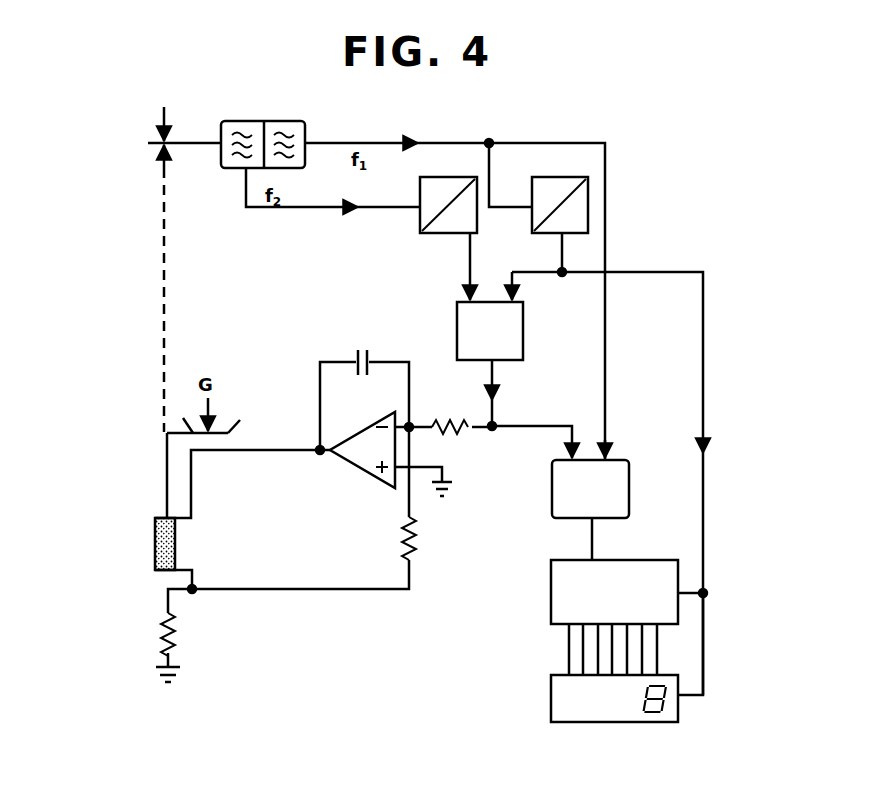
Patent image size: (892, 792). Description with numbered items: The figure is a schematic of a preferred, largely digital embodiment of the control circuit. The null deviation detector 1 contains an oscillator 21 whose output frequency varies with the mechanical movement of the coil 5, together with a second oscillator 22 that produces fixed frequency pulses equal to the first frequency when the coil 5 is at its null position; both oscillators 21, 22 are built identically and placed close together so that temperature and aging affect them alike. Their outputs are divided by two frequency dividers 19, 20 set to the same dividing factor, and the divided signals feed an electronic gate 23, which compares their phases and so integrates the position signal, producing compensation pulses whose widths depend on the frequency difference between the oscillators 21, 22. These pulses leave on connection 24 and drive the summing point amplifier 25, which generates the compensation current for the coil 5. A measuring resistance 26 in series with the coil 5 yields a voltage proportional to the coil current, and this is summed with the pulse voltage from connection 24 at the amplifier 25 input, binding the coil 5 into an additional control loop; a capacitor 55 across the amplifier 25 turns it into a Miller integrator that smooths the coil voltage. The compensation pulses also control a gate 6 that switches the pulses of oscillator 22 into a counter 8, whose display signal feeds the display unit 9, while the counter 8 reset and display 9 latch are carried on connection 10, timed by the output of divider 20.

The null deviation detector 1 is at (314, 134).
The oscillator 21 is at (237, 121).
The second oscillator 22 is at (282, 121).
The frequency divider 19 is at (428, 233).
The frequency divider 20 is at (573, 177).
The electronic gate 23 is at (523, 316).
The connection 24 is at (527, 424).
The gate 6 is at (552, 492).
The counter 8 is at (551, 590).
The display unit 9 is at (551, 697).
The connection 10 is at (704, 636).
The capacitor 55 is at (356, 351).
The summing point amplifier 25 is at (366, 472).
The coil 5 is at (177, 540).
The measuring resistance 26 is at (180, 640).